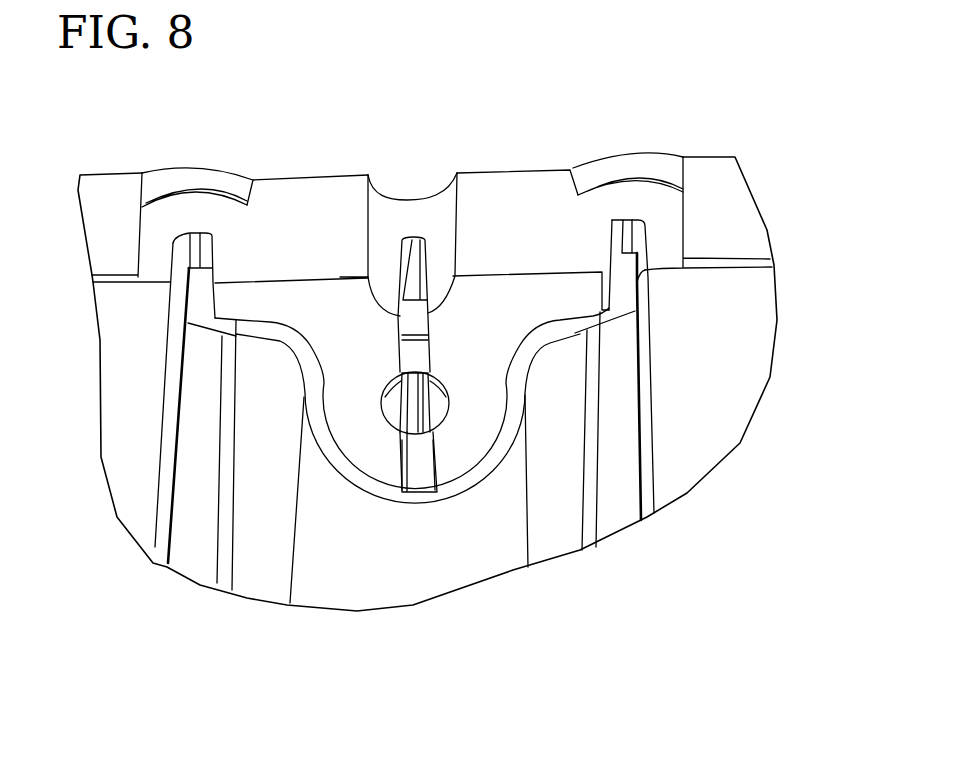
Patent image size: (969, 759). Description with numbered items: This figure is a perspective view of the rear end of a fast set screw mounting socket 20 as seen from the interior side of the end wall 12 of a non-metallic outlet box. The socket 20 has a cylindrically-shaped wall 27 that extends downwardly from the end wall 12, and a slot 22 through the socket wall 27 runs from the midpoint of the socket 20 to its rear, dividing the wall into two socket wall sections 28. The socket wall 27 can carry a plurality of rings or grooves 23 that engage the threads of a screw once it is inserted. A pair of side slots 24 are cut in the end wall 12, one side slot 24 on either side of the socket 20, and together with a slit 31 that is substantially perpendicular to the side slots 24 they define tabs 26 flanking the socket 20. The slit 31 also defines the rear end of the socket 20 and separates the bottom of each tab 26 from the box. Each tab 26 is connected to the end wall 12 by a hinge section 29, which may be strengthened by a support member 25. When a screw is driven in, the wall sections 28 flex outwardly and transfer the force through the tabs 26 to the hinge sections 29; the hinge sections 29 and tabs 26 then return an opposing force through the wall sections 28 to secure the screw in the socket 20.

The end wall 12 is at (712, 420).
The fast set screw mounting socket 20 is at (395, 437).
The slot 22 is at (407, 235).
The rings or grooves 23 is at (479, 420).
The side slot 24 is at (176, 252).
The support member 25 is at (165, 190).
The tab 26 is at (307, 307).
The cylindrically-shaped wall 27 is at (352, 307).
The wall section 28 is at (442, 463).
The hinge section 29 is at (186, 220).
The slit 31 is at (312, 398).